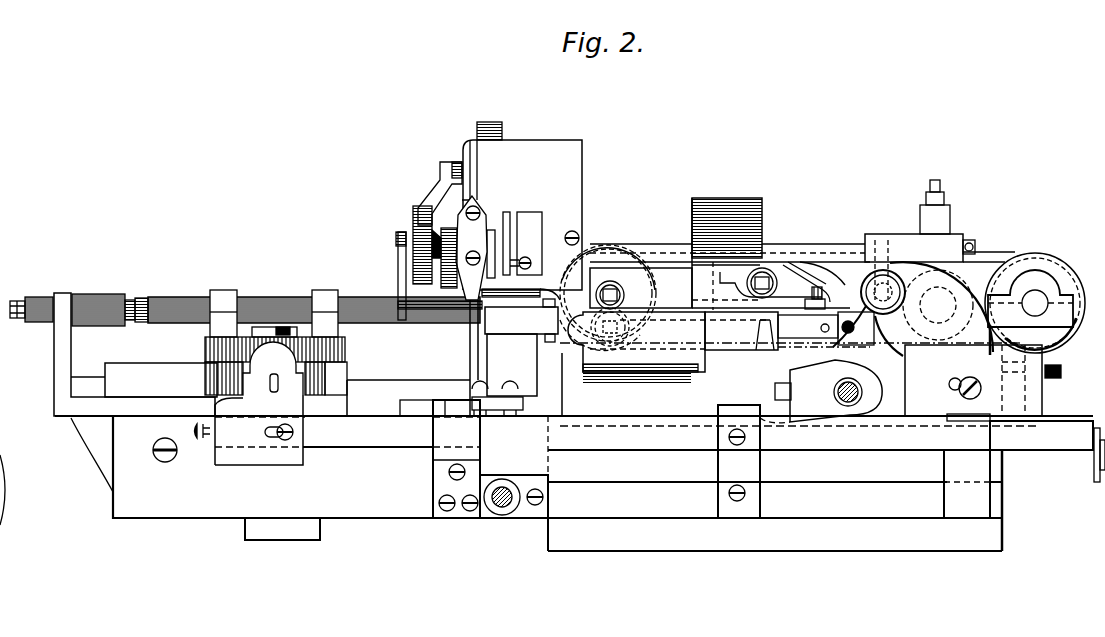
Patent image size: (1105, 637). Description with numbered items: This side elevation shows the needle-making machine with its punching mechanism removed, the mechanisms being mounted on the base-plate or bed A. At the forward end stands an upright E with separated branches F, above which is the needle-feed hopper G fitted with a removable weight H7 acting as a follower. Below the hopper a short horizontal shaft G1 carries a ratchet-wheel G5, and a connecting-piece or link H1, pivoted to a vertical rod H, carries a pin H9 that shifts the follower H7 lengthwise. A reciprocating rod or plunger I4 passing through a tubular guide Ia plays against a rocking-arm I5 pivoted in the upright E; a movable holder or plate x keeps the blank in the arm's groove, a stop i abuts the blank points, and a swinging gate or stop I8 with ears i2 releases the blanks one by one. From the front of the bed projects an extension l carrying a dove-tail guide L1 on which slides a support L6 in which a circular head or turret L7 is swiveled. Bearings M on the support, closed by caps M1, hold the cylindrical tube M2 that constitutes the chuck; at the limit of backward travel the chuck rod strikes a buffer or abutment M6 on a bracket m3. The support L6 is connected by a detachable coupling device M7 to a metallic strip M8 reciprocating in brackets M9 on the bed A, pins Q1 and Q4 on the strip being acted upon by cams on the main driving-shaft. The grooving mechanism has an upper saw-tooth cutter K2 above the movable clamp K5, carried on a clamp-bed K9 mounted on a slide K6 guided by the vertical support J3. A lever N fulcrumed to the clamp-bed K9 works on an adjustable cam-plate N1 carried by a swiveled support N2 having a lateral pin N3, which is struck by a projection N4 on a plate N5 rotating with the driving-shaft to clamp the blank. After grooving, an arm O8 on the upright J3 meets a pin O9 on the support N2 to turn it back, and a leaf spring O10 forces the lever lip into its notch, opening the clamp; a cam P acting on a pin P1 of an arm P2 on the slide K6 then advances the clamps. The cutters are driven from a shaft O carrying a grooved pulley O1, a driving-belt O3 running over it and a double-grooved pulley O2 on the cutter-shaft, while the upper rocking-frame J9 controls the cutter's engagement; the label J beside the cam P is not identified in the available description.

The extension l is at (574, 478).
The base-plate or bed A is at (826, 483).
The bearings M is at (212, 330).
The buffer or abutment M6 is at (142, 298).
The caps M1 is at (224, 290).
The cylindrical tube M2 is at (268, 300).
The bracket m3 is at (55, 372).
The dove-tail guide L1 is at (80, 388).
The support L6 is at (161, 380).
The circular head or turret L7 is at (347, 352).
The detachable coupling device M7 is at (250, 403).
The metallic strip M8 is at (368, 431).
The brackets M9 is at (433, 478).
The tubular guide Ia is at (516, 520).
The reciprocating rod or plunger I4 is at (498, 508).
The separated branches F is at (468, 349).
The vertical rod H is at (470, 341).
The swinging gate or stop I8 is at (521, 320).
The movable holder or plate x is at (541, 323).
The rocking-arm I5 is at (512, 365).
The upright E is at (525, 403).
The stop i is at (549, 343).
The needle-feed box or hopper G is at (498, 224).
The removable weight H7 is at (505, 132).
The pin H9 is at (451, 162).
The connecting-piece or link H1 is at (412, 220).
The short horizontal shaft G1 is at (460, 235).
The ratchet-wheel G5 is at (410, 266).
The ears i2 is at (455, 276).
The driving-belt O3 is at (805, 250).
The lever N is at (715, 300).
The double-grooved pulley O2 is at (605, 250).
The saw-tooth cutter K2 is at (620, 285).
The clamp-bed or block K9 is at (630, 325).
The movable needle-clamp K5 is at (598, 338).
The slide K6 is at (790, 364).
The leaf spring O10 is at (741, 331).
The support N2 is at (808, 326).
The pin N3 is at (845, 347).
The adjustable cam-plate N1 is at (875, 335).
The arm O8 is at (815, 295).
The pin O9 is at (850, 268).
The upper rocking-frame J9 is at (883, 270).
The pin P1 is at (905, 240).
The arm J is at (976, 266).
The cam P is at (987, 285).
The shaft O is at (1045, 275).
The grooved pulley O1 is at (1037, 265).
The vertical support J3 is at (1030, 299).
The arm P2 is at (983, 380).
The plate N5 is at (821, 391).
The projection N4 is at (775, 391).
The pin Q1 is at (728, 436).
The second pin Q4 is at (728, 493).